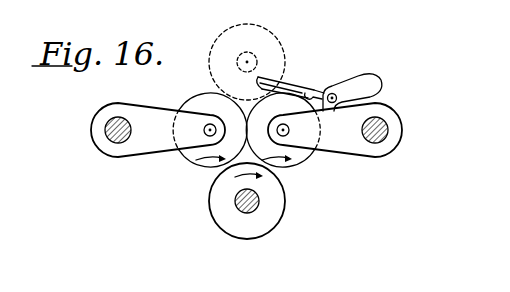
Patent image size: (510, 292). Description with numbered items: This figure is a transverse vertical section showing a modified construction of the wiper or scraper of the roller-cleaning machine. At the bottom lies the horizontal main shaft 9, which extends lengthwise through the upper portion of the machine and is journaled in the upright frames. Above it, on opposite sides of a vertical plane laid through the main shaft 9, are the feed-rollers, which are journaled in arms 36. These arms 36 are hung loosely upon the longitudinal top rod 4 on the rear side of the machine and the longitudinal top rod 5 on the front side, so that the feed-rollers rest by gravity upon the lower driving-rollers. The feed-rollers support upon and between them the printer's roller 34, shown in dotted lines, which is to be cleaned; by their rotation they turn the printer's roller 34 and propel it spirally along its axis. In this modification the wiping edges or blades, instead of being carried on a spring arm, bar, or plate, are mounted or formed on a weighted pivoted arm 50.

The longitudinal top rod 4 is at (106, 130).
The longitudinal top rod 5 is at (388, 130).
The main shaft 9 is at (240, 213).
The printer's roller 34 is at (243, 23).
The arms 36 is at (246, 130).
The weighted pivoted arm 50 is at (330, 94).